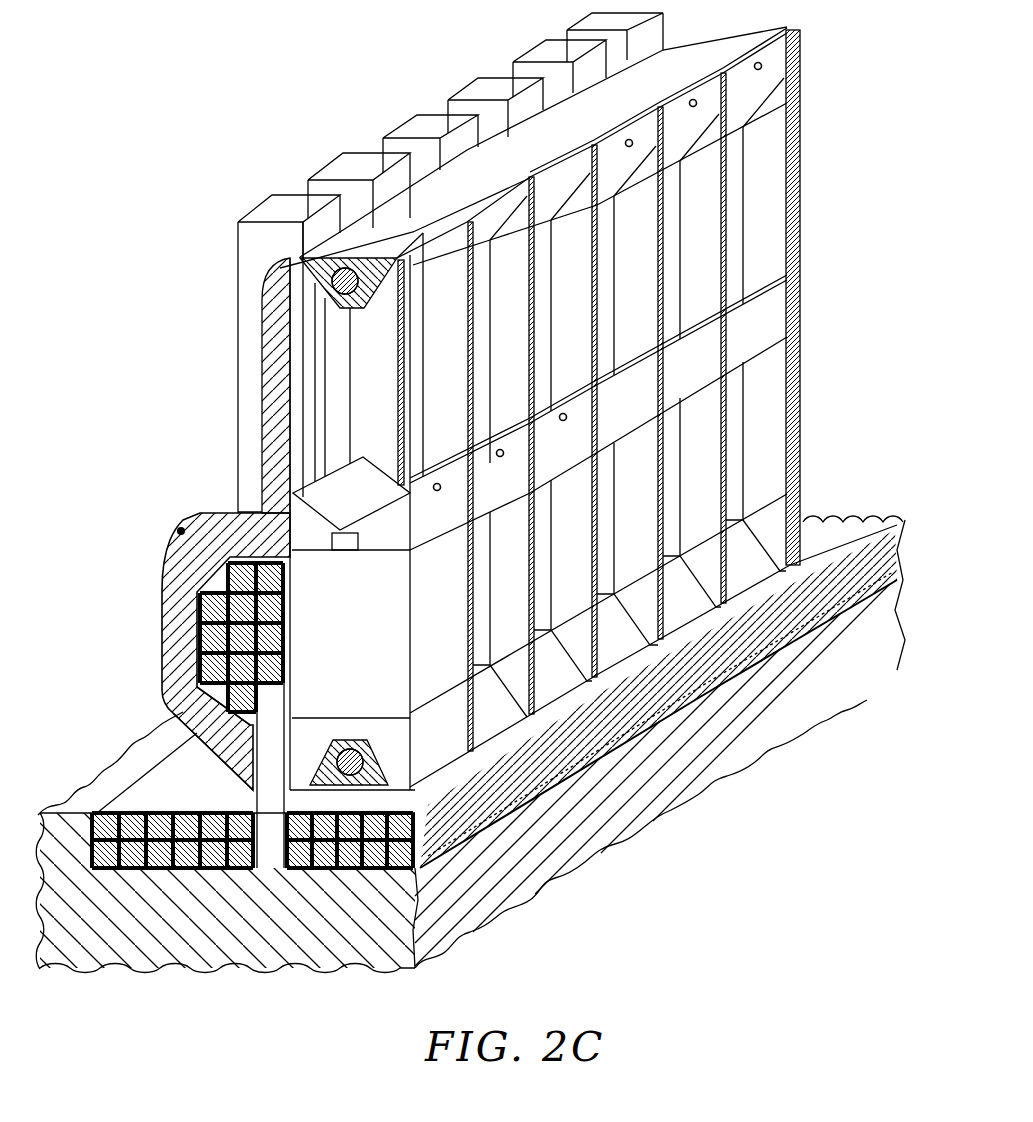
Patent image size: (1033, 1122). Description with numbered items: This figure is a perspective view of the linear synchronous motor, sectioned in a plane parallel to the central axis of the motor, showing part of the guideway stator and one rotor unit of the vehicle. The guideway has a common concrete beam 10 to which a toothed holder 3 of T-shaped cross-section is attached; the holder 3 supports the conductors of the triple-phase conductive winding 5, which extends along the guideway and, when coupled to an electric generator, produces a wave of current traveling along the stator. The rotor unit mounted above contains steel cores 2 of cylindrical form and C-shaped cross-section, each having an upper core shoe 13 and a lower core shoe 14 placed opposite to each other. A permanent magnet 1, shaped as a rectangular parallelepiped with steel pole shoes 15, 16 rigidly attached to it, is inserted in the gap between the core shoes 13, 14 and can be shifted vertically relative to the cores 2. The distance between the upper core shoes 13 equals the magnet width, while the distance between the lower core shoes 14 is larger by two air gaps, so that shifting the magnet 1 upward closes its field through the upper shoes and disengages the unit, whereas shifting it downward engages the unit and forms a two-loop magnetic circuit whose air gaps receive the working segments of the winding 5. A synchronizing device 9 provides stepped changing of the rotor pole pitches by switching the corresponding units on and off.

The permanent magnet 1 is at (755, 243).
The steel core 2 is at (177, 668).
The toothed holder 3 is at (203, 875).
The triple-phase conductive winding 5 is at (213, 613).
The synchronizing device 9 is at (258, 260).
The concrete beam 10 is at (568, 866).
The upper core shoe 13 is at (282, 370).
The lower core shoe 14 is at (235, 764).
The steel pole shoe 15 is at (300, 513).
The steel pole shoe 16 is at (375, 785).